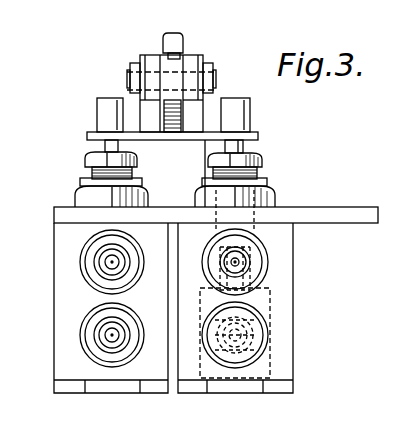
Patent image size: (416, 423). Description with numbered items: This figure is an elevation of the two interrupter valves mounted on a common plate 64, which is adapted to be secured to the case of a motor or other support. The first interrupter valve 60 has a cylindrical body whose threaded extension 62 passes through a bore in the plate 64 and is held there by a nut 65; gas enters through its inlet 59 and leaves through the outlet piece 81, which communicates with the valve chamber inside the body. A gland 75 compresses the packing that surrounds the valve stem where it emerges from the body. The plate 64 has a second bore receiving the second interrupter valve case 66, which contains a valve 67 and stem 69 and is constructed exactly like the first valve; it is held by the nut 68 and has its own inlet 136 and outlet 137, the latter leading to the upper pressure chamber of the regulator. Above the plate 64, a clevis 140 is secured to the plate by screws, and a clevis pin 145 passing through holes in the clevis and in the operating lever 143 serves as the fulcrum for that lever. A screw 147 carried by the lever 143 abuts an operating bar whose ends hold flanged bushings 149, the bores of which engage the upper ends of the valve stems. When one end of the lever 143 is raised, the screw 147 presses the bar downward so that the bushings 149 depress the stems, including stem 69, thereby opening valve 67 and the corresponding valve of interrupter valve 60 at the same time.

The inlet 59 is at (93, 262).
The interrupter valve 60 is at (68, 306).
The threaded extension 62 is at (82, 177).
The plate 64 is at (345, 207).
The nut 65 is at (82, 197).
The second interrupter valve case 66 is at (282, 294).
The valve 67 is at (270, 300).
The nut 68 is at (268, 192).
The stem 69 is at (243, 147).
The gland 75 is at (90, 157).
The outlet piece 81 is at (80, 340).
The inlet 136 is at (265, 251).
The outlet 137 is at (268, 342).
The clevis 140 is at (150, 92).
The operating lever 143 is at (170, 70).
The clevis pin 145 is at (128, 78).
The screw 147 is at (181, 38).
The flanged bushings 149 is at (100, 100).